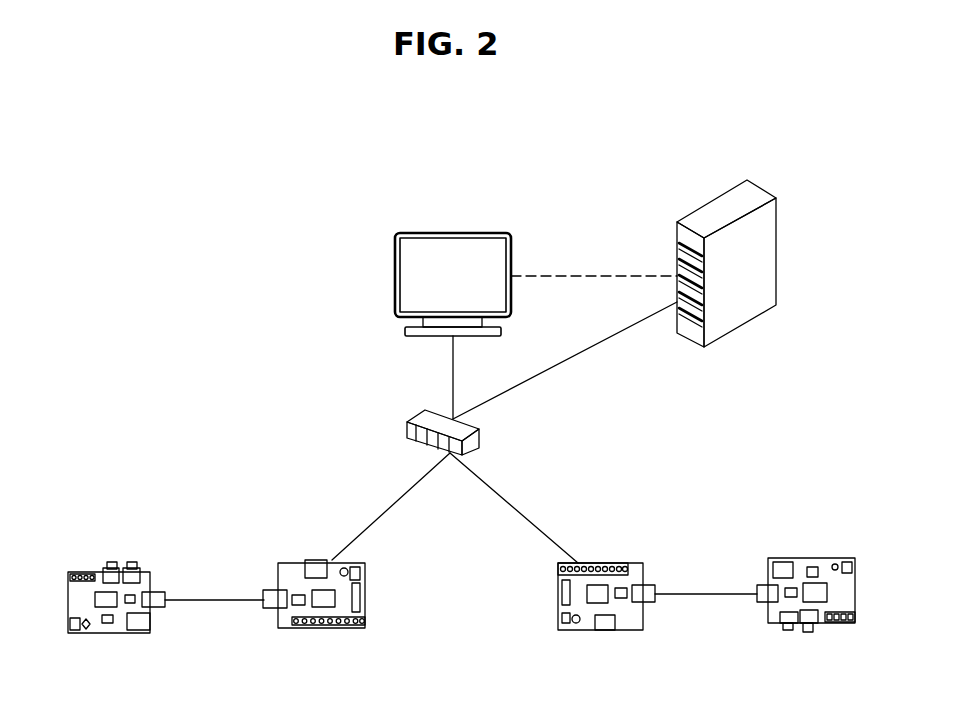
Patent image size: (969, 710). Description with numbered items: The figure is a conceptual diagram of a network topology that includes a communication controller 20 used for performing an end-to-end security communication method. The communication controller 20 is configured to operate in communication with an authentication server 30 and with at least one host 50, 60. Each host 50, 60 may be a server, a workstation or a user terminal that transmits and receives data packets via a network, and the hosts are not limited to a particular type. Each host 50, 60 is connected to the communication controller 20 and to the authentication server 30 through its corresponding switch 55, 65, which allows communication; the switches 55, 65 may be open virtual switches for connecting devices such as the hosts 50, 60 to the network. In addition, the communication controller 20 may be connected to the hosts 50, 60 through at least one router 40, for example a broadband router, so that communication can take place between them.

The communication controller 20 is at (453, 233).
The authentication server 30 is at (758, 188).
The router 40 is at (479, 432).
The host 50 is at (103, 633).
The switch 55 is at (318, 628).
The host 60 is at (823, 623).
The switch 65 is at (605, 630).